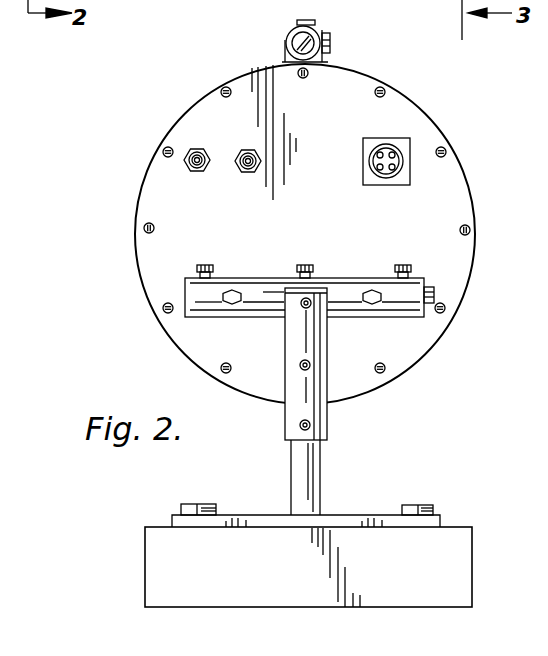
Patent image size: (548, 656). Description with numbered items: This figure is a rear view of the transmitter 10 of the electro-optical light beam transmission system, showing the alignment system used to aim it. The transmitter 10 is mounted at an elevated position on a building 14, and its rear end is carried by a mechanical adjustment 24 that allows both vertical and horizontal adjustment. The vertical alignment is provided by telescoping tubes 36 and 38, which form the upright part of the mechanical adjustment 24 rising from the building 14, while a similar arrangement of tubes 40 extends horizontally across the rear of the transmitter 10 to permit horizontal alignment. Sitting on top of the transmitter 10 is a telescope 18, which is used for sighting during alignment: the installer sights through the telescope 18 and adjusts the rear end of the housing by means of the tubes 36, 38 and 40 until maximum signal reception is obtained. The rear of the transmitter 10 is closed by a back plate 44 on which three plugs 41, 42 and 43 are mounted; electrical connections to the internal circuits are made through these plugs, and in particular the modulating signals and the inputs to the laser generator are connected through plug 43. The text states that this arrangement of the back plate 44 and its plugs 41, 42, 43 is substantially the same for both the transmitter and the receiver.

The transmitter 10 is at (433, 118).
The building 14 is at (455, 549).
The telescope 18 is at (286, 45).
The mechanical adjustment 24 is at (329, 427).
The telescoping tube 36 is at (291, 475).
The telescoping tube 38 is at (294, 422).
The tubes 40 is at (434, 290).
The plug 41 is at (189, 152).
The plug 42 is at (409, 152).
The plug 43 is at (242, 150).
The back plate 44 is at (441, 213).